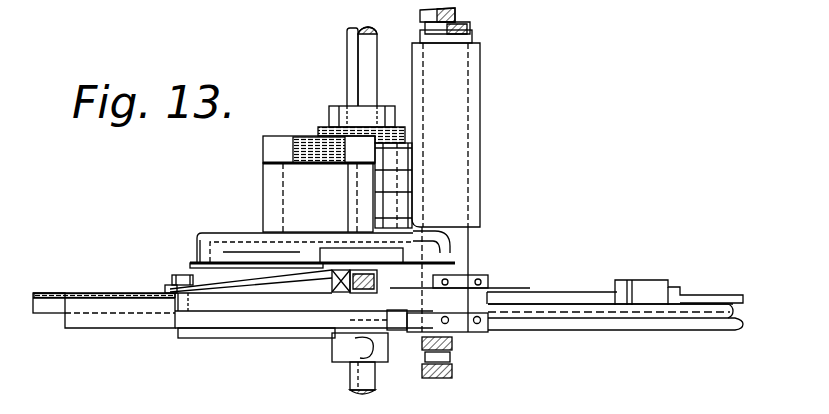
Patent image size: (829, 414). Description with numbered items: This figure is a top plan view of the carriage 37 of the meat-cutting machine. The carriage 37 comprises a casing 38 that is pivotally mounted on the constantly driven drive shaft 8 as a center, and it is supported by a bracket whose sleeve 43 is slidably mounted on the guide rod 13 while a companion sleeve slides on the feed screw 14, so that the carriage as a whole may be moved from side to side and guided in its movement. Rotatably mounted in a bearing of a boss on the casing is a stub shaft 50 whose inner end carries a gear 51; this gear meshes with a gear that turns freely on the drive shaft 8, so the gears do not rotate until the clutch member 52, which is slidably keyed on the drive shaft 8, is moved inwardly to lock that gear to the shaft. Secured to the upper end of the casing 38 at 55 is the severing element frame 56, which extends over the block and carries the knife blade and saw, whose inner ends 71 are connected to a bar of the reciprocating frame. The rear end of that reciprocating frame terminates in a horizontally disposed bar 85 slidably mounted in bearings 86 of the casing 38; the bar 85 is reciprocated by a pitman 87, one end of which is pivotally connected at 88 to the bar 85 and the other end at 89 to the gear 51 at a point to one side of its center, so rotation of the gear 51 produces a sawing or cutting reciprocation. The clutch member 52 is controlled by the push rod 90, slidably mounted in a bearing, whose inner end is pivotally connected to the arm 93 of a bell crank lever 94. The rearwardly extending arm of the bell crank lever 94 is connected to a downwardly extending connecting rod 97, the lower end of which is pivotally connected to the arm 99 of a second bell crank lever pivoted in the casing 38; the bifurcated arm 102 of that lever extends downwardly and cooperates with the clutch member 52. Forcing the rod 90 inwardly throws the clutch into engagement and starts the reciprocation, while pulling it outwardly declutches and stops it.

The drive shaft 8 is at (350, 60).
The guide rod 13 is at (472, 35).
The feed screw 14 is at (456, 15).
The carriage 37 is at (272, 237).
The casing 38 is at (223, 252).
The sleeve 43 is at (446, 128).
The stub shaft 50 is at (319, 184).
The gear 51 is at (200, 240).
The clutch member 52 is at (314, 232).
The securing point 55 is at (467, 333).
The severing element frame 56 is at (697, 310).
The inner ends 71 is at (400, 182).
The bar 85 is at (558, 297).
The bearings 86 is at (115, 317).
The pitman 87 is at (230, 283).
The pivotal connection 88 is at (165, 290).
The pivotal connection 89 is at (327, 275).
The push rod 90 is at (560, 330).
The arm 93 is at (405, 333).
The bell crank lever 94 is at (384, 338).
The connecting rod 97 is at (347, 337).
The arm 99 is at (356, 356).
The bifurcated arm 102 is at (290, 336).